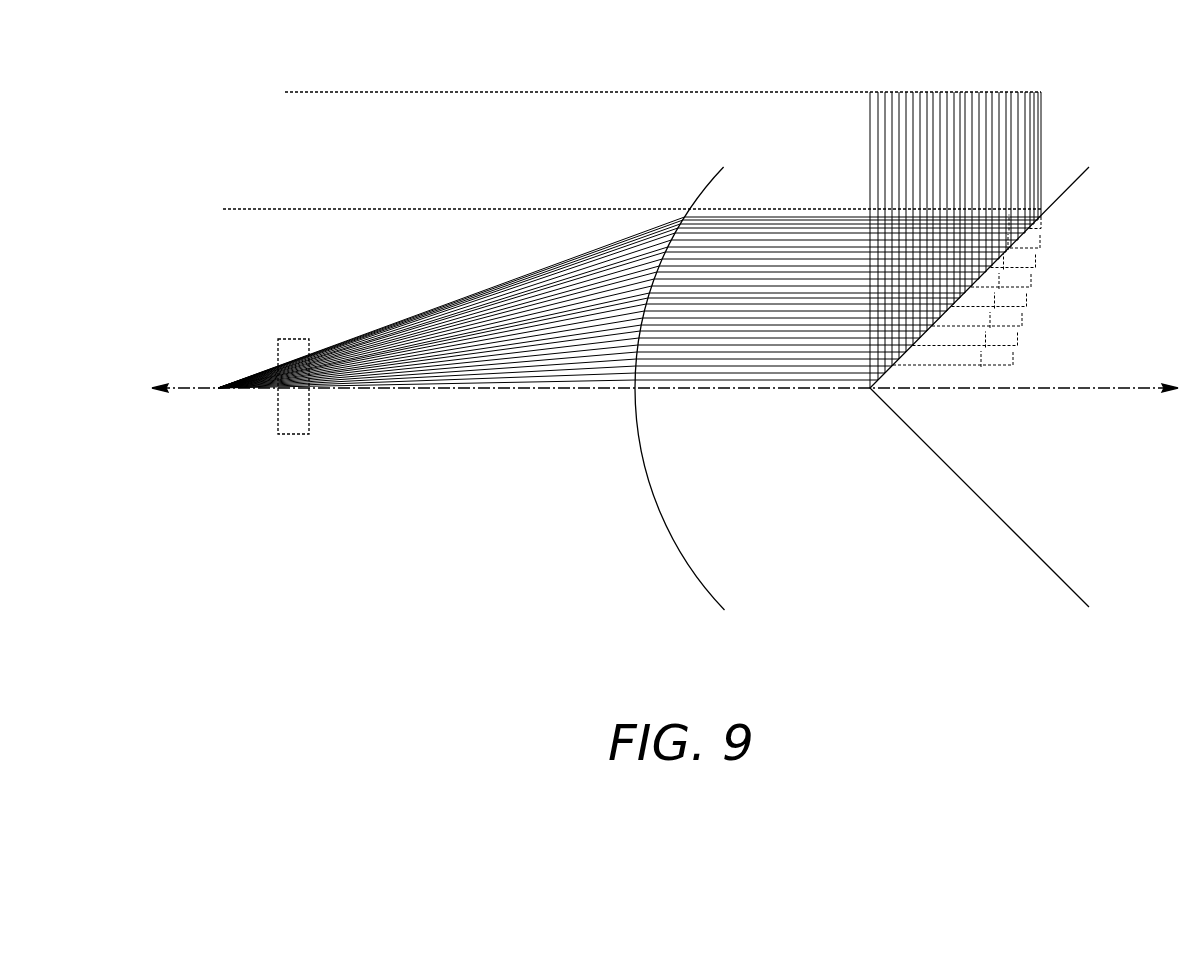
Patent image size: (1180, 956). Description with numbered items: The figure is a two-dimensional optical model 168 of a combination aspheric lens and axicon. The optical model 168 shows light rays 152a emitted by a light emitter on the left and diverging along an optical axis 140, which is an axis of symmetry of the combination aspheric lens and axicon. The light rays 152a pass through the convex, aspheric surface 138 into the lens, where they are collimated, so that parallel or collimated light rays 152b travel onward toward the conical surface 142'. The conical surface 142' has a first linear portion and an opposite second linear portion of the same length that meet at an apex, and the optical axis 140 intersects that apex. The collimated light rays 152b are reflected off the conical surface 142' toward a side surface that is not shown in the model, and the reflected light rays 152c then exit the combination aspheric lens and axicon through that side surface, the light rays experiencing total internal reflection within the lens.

The convex surface 138 is at (683, 555).
The optical axis 140 is at (1108, 392).
The conical surface 142' is at (993, 387).
The light rays 152a is at (460, 293).
The collimated light rays 152b is at (820, 228).
The reflected light rays 152c is at (1042, 150).
The optical model 168 is at (1042, 83).